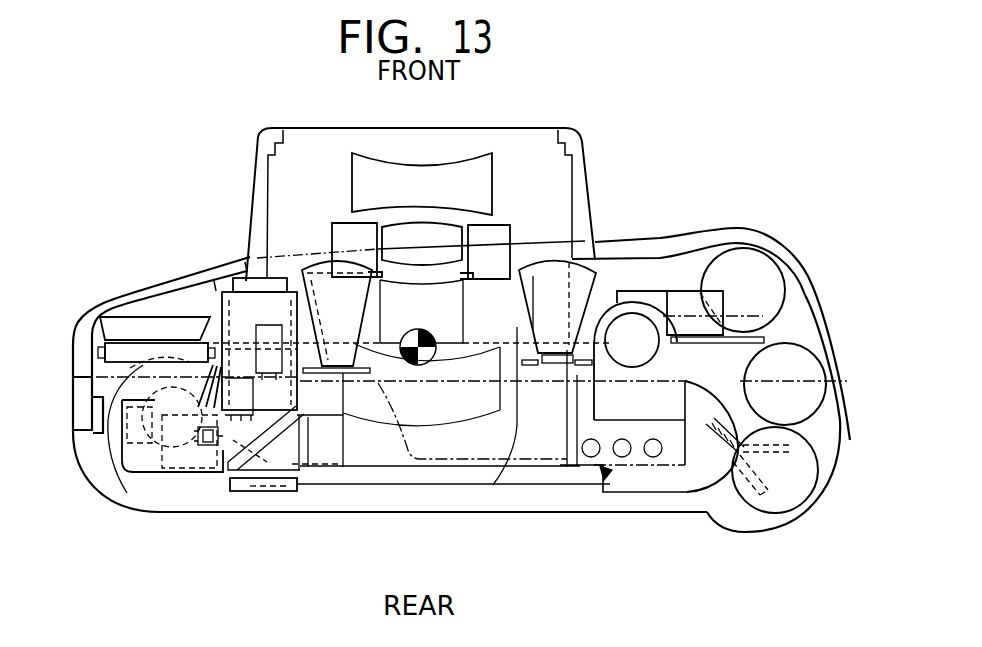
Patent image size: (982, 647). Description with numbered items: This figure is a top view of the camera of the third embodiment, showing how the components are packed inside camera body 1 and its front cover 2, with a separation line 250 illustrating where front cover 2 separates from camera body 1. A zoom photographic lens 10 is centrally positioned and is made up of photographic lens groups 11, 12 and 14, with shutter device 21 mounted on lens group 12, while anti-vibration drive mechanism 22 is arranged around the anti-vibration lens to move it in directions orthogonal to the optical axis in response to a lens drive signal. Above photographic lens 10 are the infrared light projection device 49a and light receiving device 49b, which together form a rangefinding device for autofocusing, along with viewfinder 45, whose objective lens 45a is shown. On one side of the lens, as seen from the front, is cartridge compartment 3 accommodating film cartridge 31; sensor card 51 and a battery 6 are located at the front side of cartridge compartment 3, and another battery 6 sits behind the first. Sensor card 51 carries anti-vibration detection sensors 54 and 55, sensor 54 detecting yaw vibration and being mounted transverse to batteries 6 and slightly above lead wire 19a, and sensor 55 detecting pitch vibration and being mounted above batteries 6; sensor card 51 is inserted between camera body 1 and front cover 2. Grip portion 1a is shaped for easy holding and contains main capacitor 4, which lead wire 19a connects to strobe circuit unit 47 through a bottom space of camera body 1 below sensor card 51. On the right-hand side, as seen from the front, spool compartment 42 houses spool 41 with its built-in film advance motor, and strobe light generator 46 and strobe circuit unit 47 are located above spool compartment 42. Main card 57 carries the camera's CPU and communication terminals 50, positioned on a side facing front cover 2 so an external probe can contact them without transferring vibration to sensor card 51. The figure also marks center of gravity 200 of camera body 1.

The camera body 1 is at (420, 482).
The grip portion 1a is at (820, 497).
The front cover 2 is at (753, 233).
The cartridge compartment 3 is at (653, 494).
The main capacitor 4 is at (790, 503).
The battery 6 is at (762, 272).
The zoom photographic lens 10 is at (597, 138).
The photographic lens group 11 is at (448, 177).
The photographic lens group 12 is at (395, 235).
The photographic lens group 14 is at (367, 467).
The lead wire 19a is at (730, 462).
The shutter device 21 is at (340, 223).
The anti-vibration drive mechanism 22 is at (497, 470).
The film cartridge 31 is at (677, 483).
The spool 41 is at (150, 472).
The spool compartment 42 is at (111, 442).
The viewfinder 45 is at (219, 296).
The objective lens 45a is at (247, 277).
The strobe light generator 46 is at (120, 327).
The strobe circuit unit 47 is at (200, 467).
The infrared light projection device 49a is at (325, 268).
The light receiving device 49b is at (594, 272).
The communication terminals 50 is at (620, 457).
The sensor card 51 is at (767, 343).
The anti-vibration detection sensor 54 is at (619, 290).
The anti-vibration detection sensor 55 is at (668, 302).
The main card 57 is at (652, 458).
The center of gravity 200 is at (418, 329).
The separation line 250 is at (851, 442).